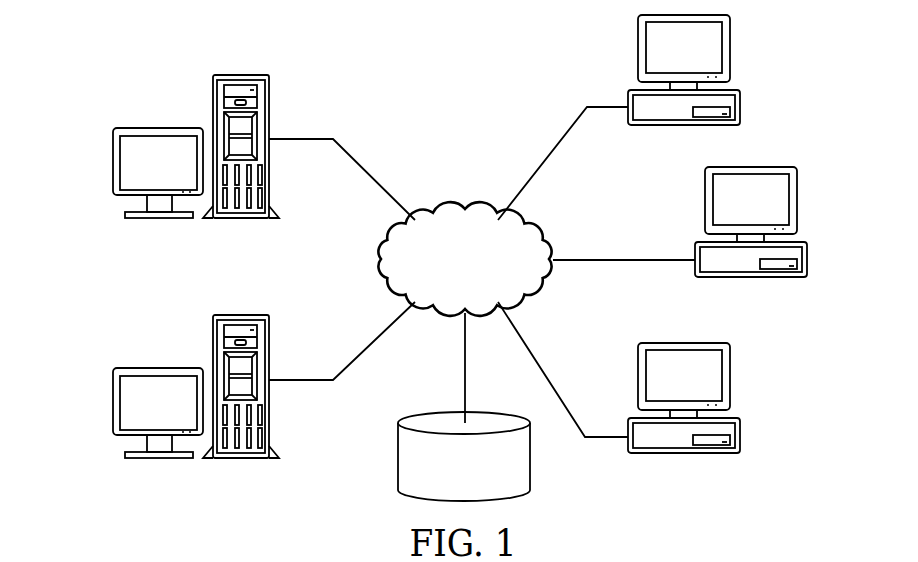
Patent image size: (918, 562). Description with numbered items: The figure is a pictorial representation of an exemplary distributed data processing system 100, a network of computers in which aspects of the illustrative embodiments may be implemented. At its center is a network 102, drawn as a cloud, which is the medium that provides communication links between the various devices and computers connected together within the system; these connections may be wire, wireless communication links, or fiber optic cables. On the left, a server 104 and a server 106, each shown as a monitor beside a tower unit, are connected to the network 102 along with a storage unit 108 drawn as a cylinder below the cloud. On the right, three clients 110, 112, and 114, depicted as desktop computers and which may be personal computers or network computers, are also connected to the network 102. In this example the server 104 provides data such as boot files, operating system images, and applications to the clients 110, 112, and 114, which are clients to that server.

The distributed data processing system 100 is at (337, 51).
The network 102 is at (442, 210).
The server 104 is at (113, 163).
The server 106 is at (113, 402).
The storage unit 108 is at (398, 458).
The client 110 is at (740, 100).
The client 112 is at (805, 268).
The client 114 is at (740, 443).